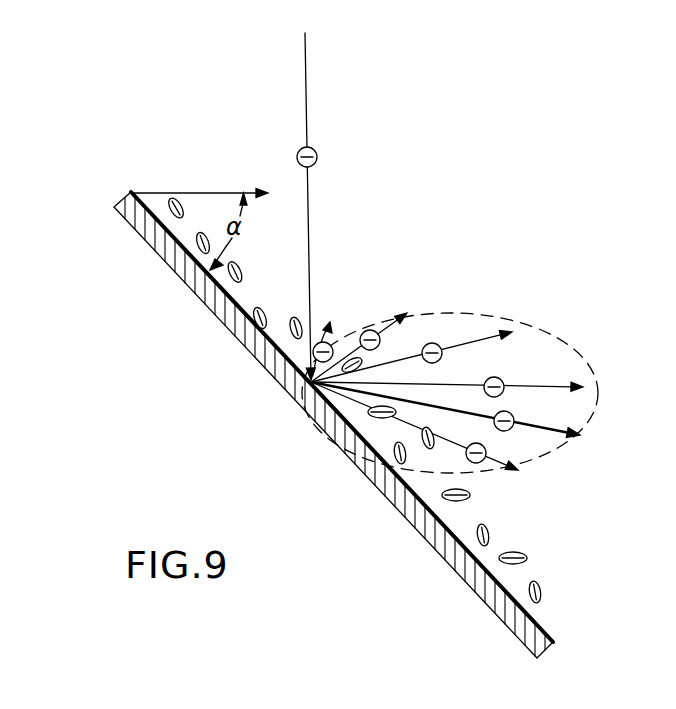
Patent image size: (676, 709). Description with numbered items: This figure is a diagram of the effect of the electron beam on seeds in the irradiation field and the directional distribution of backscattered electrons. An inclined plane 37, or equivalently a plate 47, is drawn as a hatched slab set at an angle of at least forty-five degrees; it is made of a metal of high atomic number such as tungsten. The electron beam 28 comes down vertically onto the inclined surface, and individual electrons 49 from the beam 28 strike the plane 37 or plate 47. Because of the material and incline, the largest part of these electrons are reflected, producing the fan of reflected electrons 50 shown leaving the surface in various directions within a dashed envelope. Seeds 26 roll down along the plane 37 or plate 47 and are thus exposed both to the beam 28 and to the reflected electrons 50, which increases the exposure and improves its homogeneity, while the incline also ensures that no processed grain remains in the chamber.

The seeds 26 is at (200, 243).
The electron beam 28 is at (307, 93).
The inclined plane 37 is at (333, 425).
The plate 47 is at (318, 418).
The electrons 49 is at (317, 157).
The reflected electrons 50 is at (500, 397).